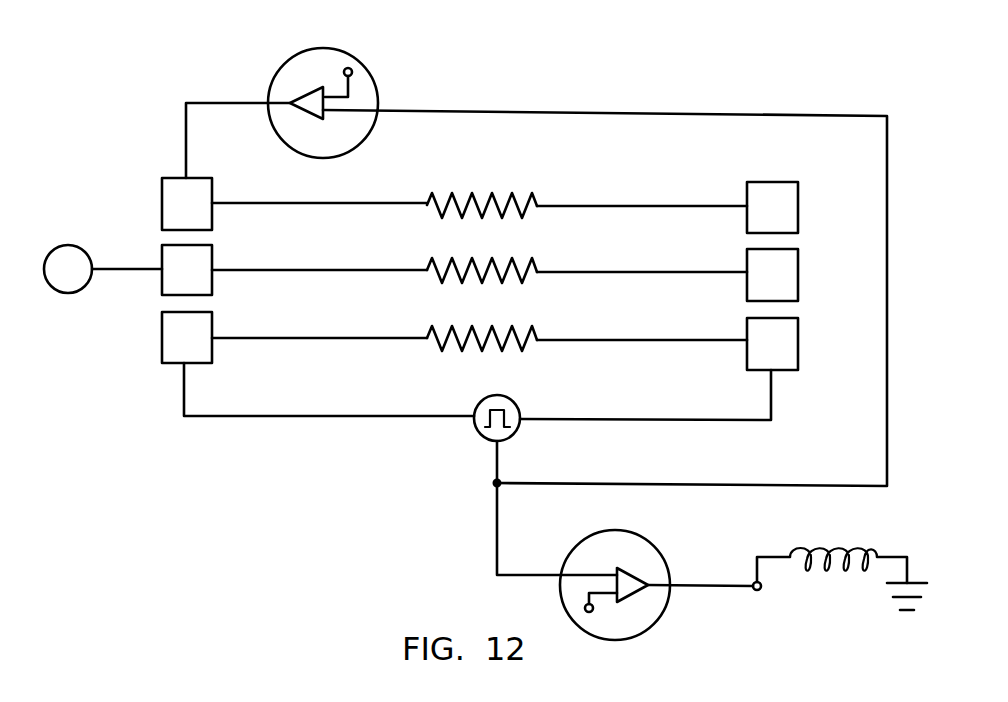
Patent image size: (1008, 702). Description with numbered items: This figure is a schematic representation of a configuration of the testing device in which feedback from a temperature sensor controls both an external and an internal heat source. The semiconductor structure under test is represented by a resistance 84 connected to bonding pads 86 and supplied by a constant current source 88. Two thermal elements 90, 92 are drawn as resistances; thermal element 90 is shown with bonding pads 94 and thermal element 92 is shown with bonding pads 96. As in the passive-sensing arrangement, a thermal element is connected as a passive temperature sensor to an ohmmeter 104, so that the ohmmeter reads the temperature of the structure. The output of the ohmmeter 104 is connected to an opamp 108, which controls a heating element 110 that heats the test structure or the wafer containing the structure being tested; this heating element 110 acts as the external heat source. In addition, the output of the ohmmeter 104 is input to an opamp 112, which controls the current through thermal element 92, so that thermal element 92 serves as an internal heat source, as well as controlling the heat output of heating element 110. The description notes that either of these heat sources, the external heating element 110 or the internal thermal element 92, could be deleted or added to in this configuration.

The resistance 84 is at (488, 261).
The bonding pads 86 is at (187, 268).
The constant current source 88 is at (59, 247).
The thermal element 90 is at (488, 328).
The thermal element 92 is at (496, 194).
The bonding pads 94 is at (187, 352).
The bonding pads 96 is at (187, 213).
The ohmmeter 104 is at (506, 397).
The opamp 108 is at (675, 537).
The heating element 110 is at (800, 582).
The opamp 112 is at (335, 46).